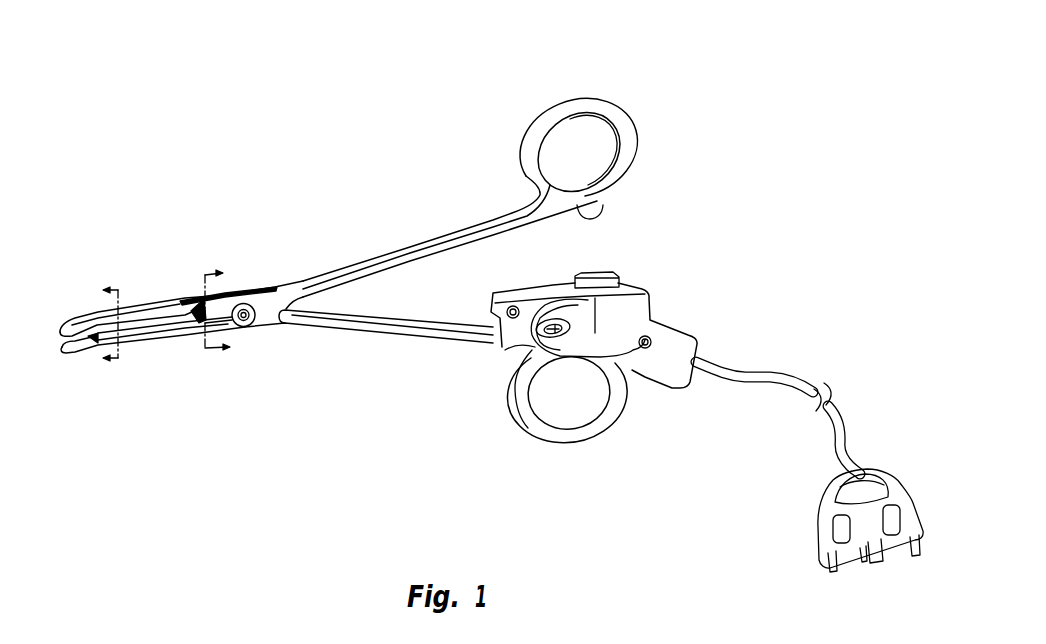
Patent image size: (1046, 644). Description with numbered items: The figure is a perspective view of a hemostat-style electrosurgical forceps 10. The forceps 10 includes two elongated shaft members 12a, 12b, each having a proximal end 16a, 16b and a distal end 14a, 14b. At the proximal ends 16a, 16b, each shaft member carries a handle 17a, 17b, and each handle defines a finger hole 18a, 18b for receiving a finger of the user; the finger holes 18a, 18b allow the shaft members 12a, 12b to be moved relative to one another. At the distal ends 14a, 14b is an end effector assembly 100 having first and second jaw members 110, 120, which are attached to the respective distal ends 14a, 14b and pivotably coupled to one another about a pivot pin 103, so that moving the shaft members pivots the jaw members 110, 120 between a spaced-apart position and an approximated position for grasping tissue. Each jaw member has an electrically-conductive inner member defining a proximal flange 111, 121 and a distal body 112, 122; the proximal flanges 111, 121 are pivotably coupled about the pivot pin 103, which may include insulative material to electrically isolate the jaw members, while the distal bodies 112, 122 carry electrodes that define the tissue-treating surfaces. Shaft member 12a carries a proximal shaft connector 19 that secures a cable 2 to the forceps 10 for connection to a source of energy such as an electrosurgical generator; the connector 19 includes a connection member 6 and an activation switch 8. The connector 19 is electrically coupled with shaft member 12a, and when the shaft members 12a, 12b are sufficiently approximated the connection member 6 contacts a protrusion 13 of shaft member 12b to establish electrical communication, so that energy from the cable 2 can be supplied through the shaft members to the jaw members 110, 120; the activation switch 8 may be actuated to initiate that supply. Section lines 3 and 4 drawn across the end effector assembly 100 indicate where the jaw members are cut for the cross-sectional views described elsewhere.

The forceps 10 is at (343, 150).
The cable 2 is at (808, 378).
The connection member 6 is at (618, 275).
The activation switch 8 is at (535, 347).
The proximal shaft connector 19 is at (658, 291).
The shaft member 12a is at (412, 334).
The shaft member 12b is at (410, 247).
The distal end 14a is at (306, 316).
The distal end 14b is at (308, 279).
The proximal end 16a is at (448, 340).
The proximal end 16b is at (485, 228).
The handle 17a is at (562, 443).
The handle 17b is at (582, 98).
The finger hole 18a is at (589, 410).
The finger hole 18b is at (600, 135).
The protrusion 13 is at (610, 203).
The end effector assembly 100 is at (253, 384).
The first jaw member 110 is at (64, 328).
The distal body 112 is at (88, 313).
The proximal flange 111 is at (235, 297).
The second jaw member 120 is at (70, 350).
The distal body 122 is at (100, 350).
The proximal flange 121 is at (230, 328).
The pivot pin 103 is at (249, 327).
The section line 3- 3 is at (112, 327).
The section line 4- 4 is at (217, 310).